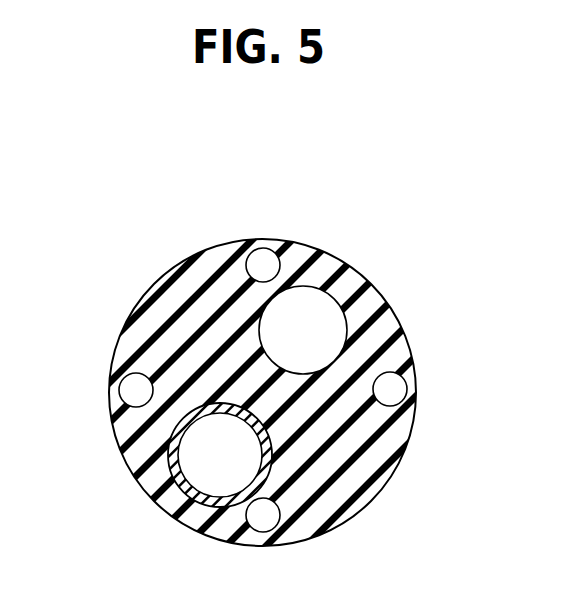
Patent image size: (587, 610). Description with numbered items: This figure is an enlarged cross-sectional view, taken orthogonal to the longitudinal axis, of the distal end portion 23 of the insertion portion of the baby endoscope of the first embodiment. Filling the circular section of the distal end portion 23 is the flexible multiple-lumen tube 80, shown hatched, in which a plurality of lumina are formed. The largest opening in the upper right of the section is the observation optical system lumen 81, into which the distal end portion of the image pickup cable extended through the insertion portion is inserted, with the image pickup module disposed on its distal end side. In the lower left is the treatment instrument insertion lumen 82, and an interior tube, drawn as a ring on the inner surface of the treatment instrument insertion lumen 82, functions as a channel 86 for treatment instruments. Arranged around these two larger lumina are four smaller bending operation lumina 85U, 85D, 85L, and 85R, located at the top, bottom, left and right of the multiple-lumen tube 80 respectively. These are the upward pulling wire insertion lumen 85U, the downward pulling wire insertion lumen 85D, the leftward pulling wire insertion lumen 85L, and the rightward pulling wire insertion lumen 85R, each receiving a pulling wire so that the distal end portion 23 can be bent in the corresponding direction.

The multiple-lumen tube 80 is at (440, 268).
The distal end portion 23 is at (162, 283).
The observation optical system lumen 81 is at (318, 305).
The bending operation lumen 85U is at (263, 262).
The bending operation lumen 85L is at (132, 393).
The bending operation lumen 85R is at (392, 392).
The bending operation lumen 85D is at (265, 518).
The channel 86 is at (277, 395).
The treatment instrument insertion lumen 82 is at (176, 461).